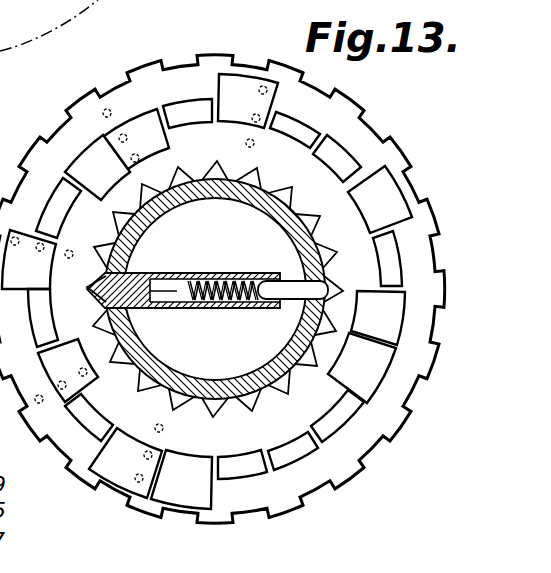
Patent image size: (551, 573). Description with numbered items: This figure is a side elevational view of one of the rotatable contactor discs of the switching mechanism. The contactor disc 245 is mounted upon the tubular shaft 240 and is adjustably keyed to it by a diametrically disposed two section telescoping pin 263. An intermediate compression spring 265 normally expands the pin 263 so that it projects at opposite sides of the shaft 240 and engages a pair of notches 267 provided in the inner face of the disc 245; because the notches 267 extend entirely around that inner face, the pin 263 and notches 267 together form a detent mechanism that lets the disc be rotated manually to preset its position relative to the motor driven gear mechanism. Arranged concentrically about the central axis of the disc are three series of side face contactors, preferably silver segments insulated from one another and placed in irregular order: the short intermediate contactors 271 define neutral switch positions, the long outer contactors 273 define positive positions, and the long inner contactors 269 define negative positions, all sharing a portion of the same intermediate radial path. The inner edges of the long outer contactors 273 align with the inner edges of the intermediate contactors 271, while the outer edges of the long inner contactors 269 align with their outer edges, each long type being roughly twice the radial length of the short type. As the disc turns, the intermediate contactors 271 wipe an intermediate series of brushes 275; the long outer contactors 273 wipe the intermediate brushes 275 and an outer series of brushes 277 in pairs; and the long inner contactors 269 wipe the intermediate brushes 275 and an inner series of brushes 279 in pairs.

The tubular shaft 240 is at (217, 200).
The contactor disc 245 is at (283, 522).
The two section telescoping pin 263 is at (151, 309).
The compression spring 265 is at (203, 308).
The notches 267 is at (243, 181).
The long inner contactors 269 is at (137, 135).
The short intermediate contactors 271 is at (32, 327).
The long outer contactors 273 is at (219, 92).
The intermediate series of brushes 275 is at (140, 286).
The outer series of brushes 277 is at (263, 88).
The inner series of brushes 279 is at (246, 143).